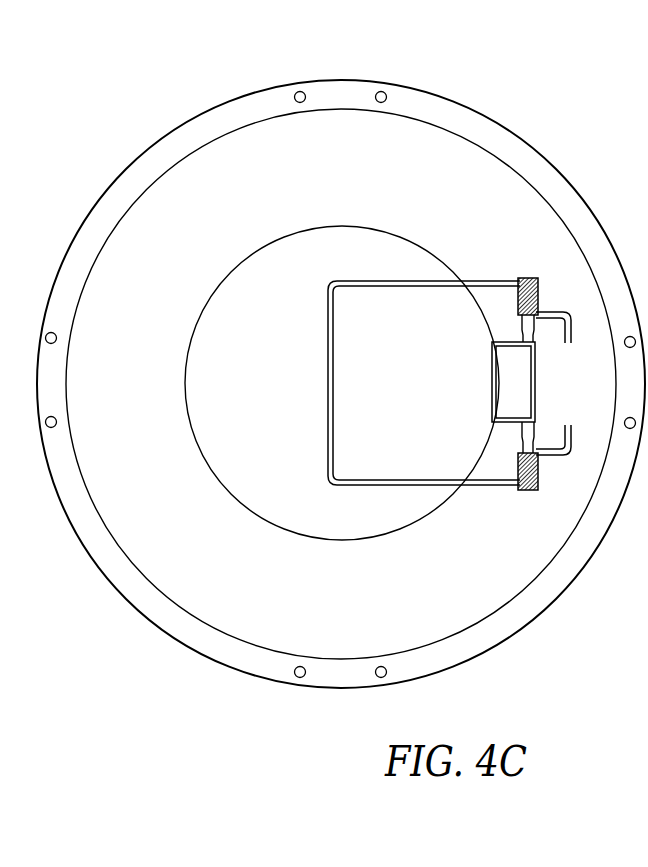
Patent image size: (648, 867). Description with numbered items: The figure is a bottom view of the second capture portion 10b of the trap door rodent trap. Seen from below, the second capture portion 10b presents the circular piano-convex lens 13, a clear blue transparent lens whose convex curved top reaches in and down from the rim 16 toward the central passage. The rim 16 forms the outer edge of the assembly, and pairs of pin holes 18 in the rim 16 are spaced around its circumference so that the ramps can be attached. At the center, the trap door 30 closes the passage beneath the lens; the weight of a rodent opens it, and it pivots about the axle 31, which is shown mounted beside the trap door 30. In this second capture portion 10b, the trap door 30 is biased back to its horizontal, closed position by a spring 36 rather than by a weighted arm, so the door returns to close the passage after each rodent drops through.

The second capture portion 10b is at (98, 124).
The piano-convex lens 13 is at (122, 364).
The rim 16 is at (73, 462).
The pin holes 18 is at (365, 95).
The trap door 30 is at (278, 367).
The axle 31 is at (525, 431).
The spring 36 is at (495, 488).